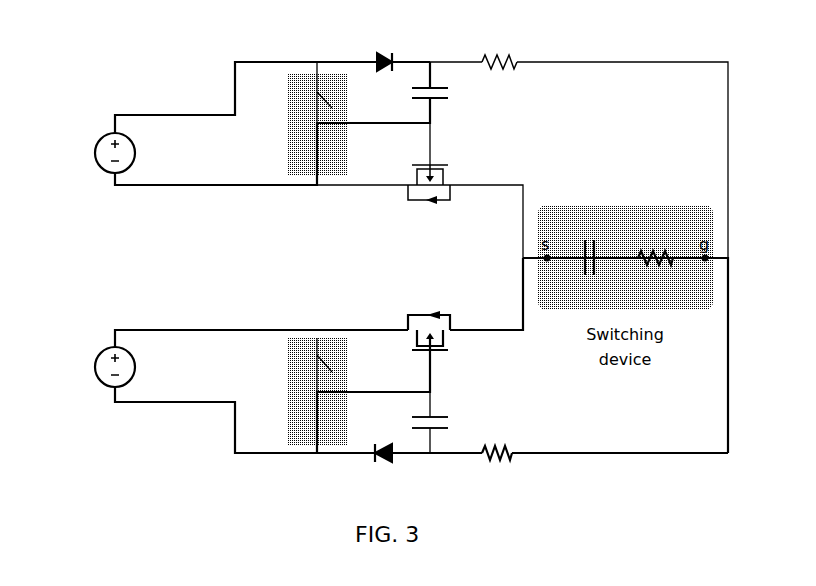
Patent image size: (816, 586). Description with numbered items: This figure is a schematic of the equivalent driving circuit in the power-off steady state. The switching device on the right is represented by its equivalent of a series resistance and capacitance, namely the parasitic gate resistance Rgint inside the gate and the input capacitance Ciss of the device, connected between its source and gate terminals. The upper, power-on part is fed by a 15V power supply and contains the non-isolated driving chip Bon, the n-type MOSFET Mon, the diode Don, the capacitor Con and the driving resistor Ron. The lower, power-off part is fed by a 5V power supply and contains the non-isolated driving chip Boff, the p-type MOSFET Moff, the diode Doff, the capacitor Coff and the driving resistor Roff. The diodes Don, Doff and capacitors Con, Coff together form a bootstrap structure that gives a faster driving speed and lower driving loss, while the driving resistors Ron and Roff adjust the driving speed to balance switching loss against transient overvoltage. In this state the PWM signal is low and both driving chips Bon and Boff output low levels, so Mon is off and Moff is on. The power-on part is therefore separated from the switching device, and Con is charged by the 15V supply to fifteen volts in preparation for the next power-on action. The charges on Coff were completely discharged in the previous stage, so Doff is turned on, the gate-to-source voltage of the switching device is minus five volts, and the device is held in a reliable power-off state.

The 15V power supply 15V is at (86, 153).
The 5V power supply 5V is at (93, 367).
The diode Don is at (379, 47).
The driving resistor Ron is at (498, 46).
The capacitor Con is at (446, 102).
The non-isolated driving chip Bon is at (296, 124).
The n-type MOSFET Mon is at (429, 202).
The p-type MOSFET Moff is at (428, 312).
The non-isolated driving chip Boff is at (296, 391).
The capacitor Coff is at (447, 423).
The diode Doff is at (380, 472).
The driving resistor Roff is at (495, 473).
The input capacitance Ciss is at (592, 244).
The parasitic gate resistance Rgint is at (650, 239).